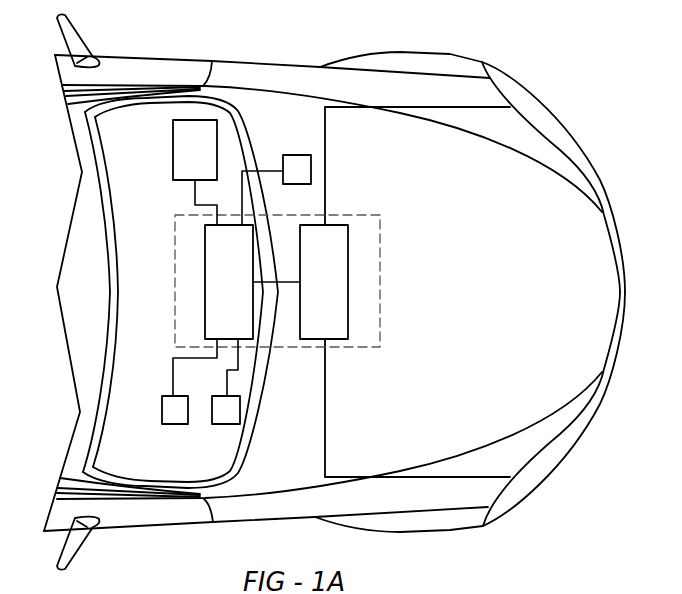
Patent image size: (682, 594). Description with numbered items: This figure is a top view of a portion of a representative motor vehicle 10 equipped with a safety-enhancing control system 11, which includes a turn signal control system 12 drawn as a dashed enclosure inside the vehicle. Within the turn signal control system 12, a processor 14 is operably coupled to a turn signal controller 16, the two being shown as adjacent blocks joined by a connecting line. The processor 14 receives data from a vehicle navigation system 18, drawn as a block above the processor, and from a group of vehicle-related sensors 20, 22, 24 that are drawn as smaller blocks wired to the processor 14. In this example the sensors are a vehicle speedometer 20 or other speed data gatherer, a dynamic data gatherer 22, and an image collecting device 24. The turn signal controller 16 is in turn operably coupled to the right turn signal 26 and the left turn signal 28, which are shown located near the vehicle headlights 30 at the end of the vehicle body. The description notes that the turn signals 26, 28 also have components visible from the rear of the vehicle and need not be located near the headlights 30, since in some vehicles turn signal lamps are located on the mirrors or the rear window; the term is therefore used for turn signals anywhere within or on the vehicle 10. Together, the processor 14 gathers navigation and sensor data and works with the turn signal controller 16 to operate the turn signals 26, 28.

The motor vehicle 10 is at (462, 53).
The safety-enhancing control system 11 is at (430, 251).
The turn signal control system 12 is at (377, 206).
The processor 14 is at (205, 295).
The turn signal controller 16 is at (348, 305).
The vehicle navigation system 18 is at (173, 167).
The vehicle speedometer 20 is at (162, 410).
The dynamic data gatherer 22 is at (240, 410).
The image collecting device 24 is at (300, 155).
The right turn signal 26 is at (503, 488).
The left turn signal 28 is at (500, 92).
The vehicle headlights 30 is at (545, 125).